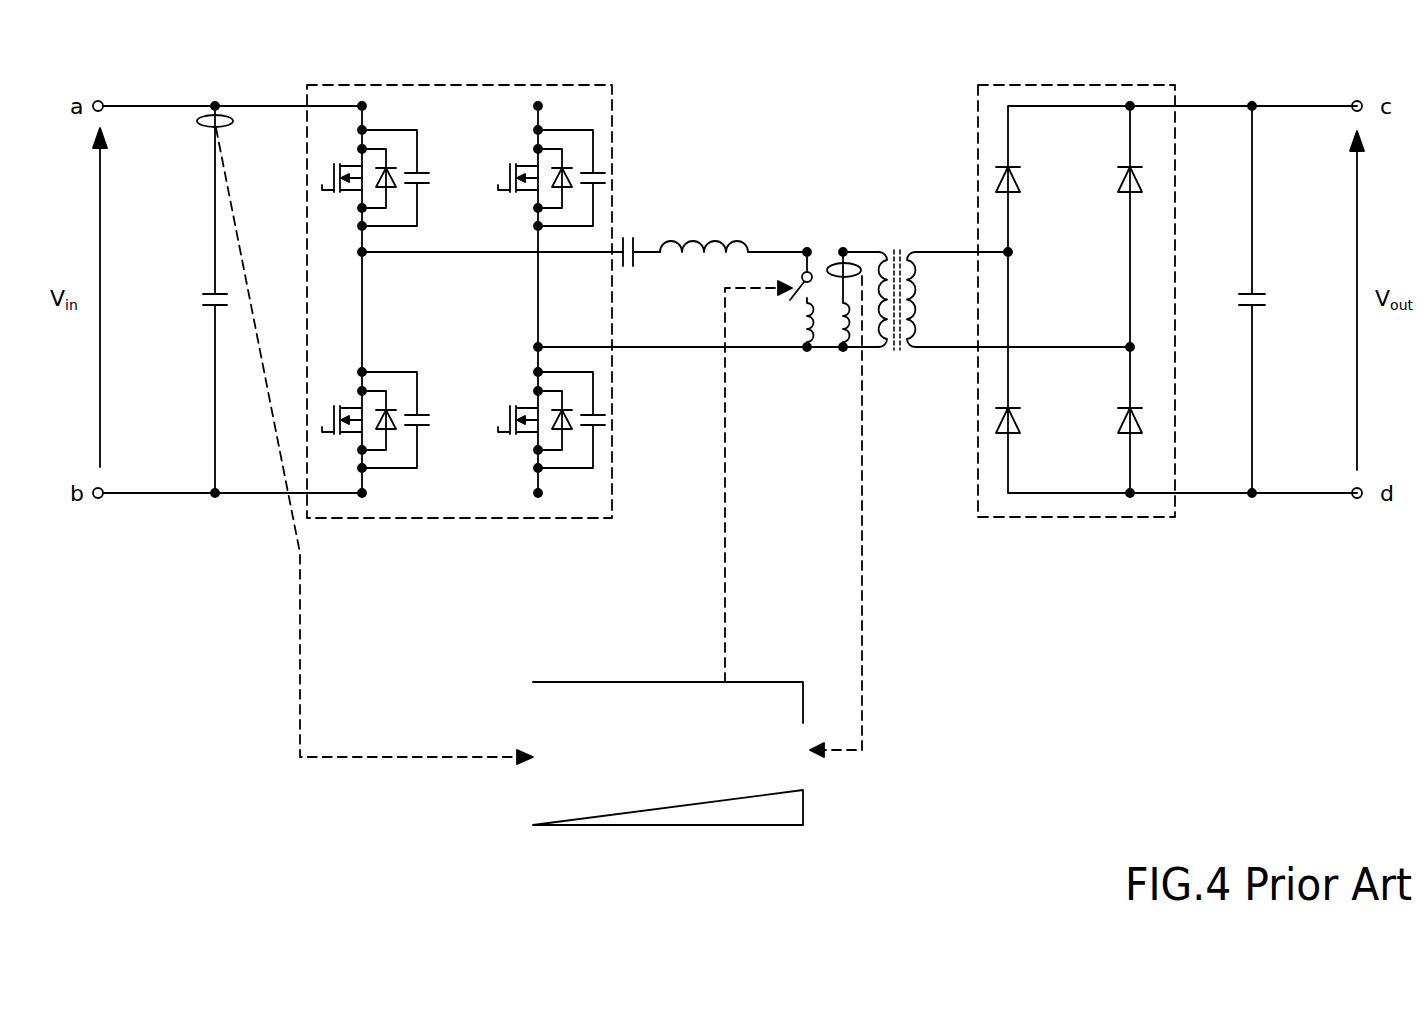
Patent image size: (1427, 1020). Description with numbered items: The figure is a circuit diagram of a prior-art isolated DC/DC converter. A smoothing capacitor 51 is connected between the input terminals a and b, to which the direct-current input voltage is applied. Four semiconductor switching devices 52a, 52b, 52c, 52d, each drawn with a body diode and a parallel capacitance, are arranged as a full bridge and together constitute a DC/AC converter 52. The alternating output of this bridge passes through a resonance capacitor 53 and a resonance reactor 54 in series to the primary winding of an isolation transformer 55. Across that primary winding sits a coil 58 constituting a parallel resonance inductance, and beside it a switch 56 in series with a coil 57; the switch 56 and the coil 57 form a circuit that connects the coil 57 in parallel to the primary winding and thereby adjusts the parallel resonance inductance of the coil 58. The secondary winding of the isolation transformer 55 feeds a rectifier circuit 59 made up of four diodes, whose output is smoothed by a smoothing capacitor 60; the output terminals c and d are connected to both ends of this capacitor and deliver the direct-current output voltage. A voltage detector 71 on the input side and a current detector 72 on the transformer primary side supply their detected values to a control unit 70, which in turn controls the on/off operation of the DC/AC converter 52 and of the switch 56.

The smoothing capacitor 51 is at (195, 302).
The DC/AC converter 52 is at (476, 83).
The semiconductor switching device 52a is at (332, 204).
The semiconductor switching device 52b is at (332, 398).
The semiconductor switching device 52c is at (494, 180).
The semiconductor switching device 52d is at (498, 407).
The resonance capacitor 53 is at (628, 232).
The resonance reactor 54 is at (698, 236).
The isolation transformer 55 is at (897, 248).
The switch 56 is at (793, 278).
The coil 57 is at (801, 322).
The coil 58 is at (838, 326).
The rectifier circuit 59 is at (1076, 83).
The smoothing capacitor 60 is at (1272, 304).
The control unit 70 is at (666, 828).
The voltage detector 71 is at (234, 126).
The current detector 72 is at (862, 264).